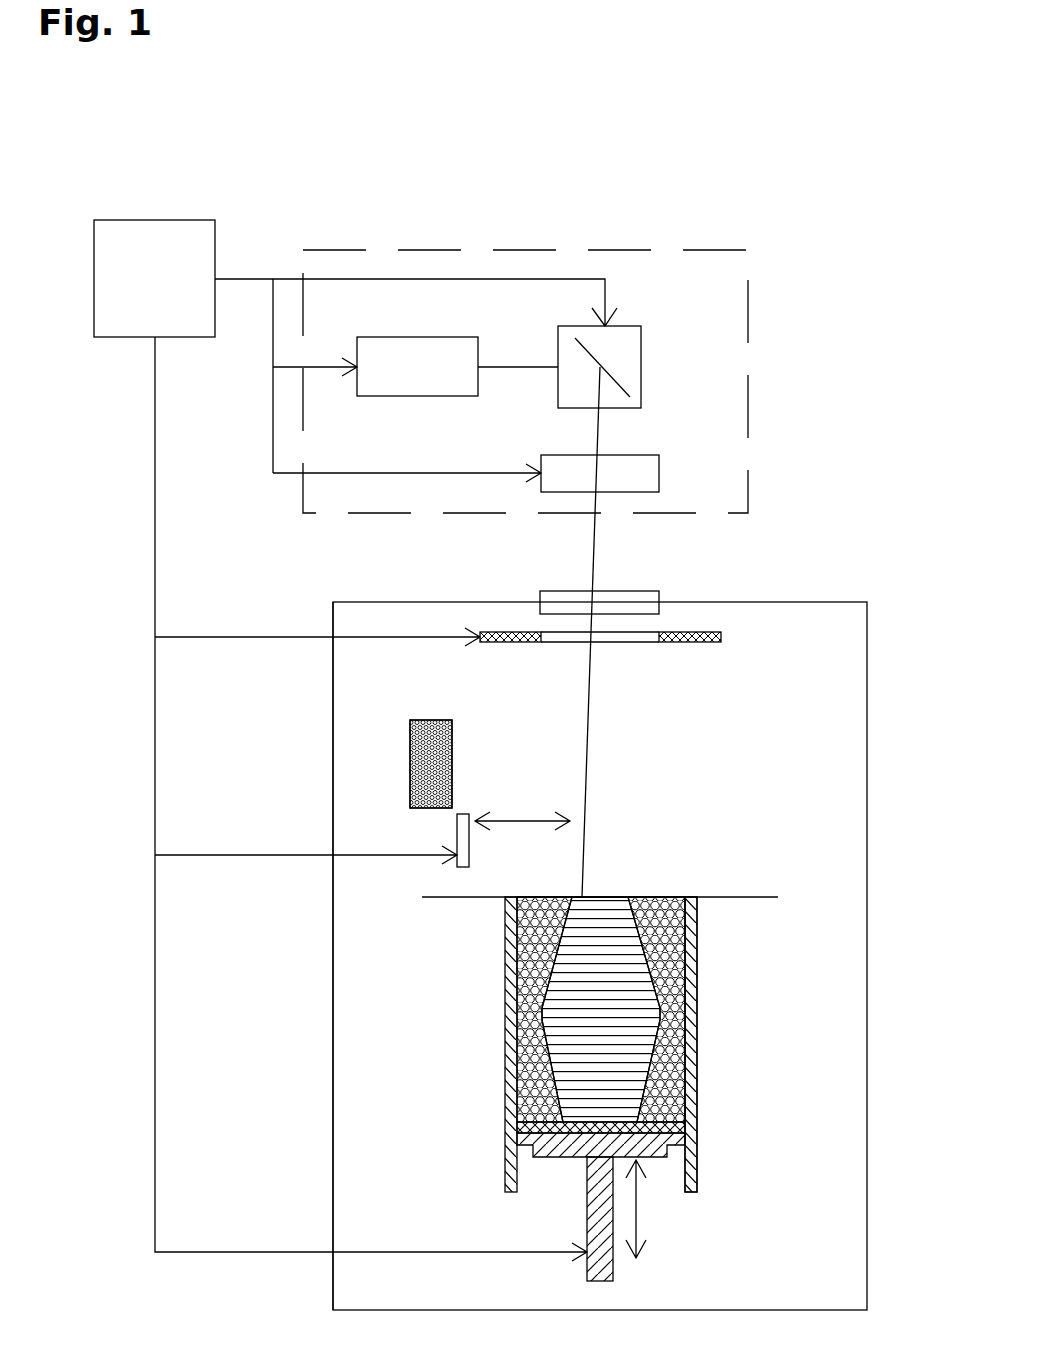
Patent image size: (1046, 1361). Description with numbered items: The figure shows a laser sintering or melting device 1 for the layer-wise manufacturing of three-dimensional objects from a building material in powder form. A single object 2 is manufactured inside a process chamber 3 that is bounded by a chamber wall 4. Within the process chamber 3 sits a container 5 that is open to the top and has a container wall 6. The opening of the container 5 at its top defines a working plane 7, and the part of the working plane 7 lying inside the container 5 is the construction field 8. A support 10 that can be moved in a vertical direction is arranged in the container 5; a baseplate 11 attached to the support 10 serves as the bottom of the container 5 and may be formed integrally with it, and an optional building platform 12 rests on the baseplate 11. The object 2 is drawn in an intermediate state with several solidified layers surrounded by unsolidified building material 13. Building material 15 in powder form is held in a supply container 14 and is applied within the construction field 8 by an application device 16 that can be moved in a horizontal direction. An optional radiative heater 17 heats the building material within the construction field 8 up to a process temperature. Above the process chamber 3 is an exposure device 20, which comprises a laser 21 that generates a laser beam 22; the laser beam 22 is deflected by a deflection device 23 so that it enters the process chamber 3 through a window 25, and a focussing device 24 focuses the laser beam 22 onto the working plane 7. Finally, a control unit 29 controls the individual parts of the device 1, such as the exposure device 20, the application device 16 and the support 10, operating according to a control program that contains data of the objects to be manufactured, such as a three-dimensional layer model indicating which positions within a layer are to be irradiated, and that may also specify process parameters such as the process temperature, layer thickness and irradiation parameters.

The laser sintering or melting device 1 is at (851, 240).
The object 2 is at (617, 955).
The process chamber 3 is at (783, 638).
The chamber wall 4 is at (332, 1098).
The container 5 is at (713, 1109).
The container wall 6 is at (697, 1045).
The working plane 7 is at (748, 897).
The construction field 8 is at (660, 897).
The support 10 is at (577, 1150).
The baseplate 11 is at (537, 1153).
The building platform 12 is at (518, 1127).
The unsolidified building material 13 is at (537, 943).
The supply container 14 is at (429, 718).
The building material 15 is at (452, 763).
The application device 16 is at (463, 837).
The radiative heater 17 is at (510, 632).
The exposure device 20 is at (748, 367).
The laser 21 is at (417, 392).
The laser beam 22 is at (498, 367).
The deflection device 23 is at (630, 337).
The focussing device 24 is at (630, 467).
The window 25 is at (633, 602).
The control unit 29 is at (355, 740).